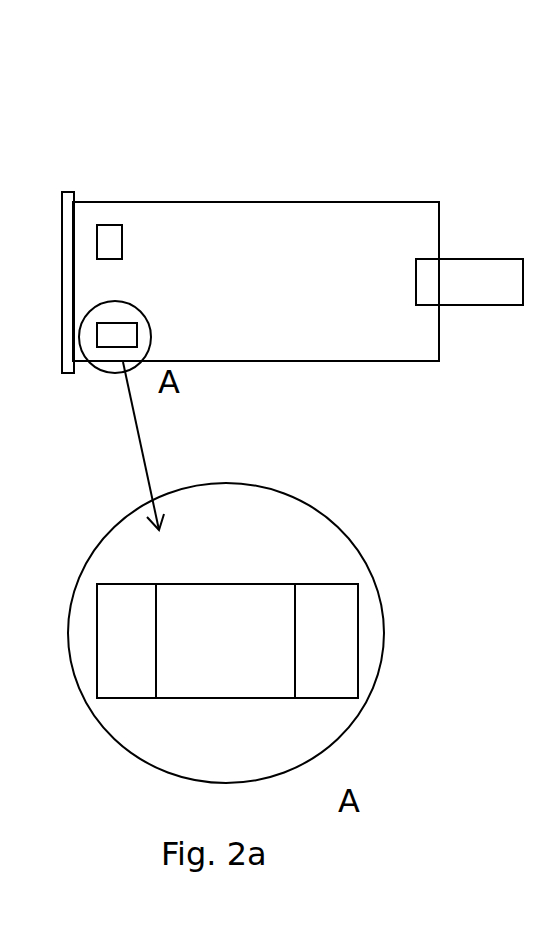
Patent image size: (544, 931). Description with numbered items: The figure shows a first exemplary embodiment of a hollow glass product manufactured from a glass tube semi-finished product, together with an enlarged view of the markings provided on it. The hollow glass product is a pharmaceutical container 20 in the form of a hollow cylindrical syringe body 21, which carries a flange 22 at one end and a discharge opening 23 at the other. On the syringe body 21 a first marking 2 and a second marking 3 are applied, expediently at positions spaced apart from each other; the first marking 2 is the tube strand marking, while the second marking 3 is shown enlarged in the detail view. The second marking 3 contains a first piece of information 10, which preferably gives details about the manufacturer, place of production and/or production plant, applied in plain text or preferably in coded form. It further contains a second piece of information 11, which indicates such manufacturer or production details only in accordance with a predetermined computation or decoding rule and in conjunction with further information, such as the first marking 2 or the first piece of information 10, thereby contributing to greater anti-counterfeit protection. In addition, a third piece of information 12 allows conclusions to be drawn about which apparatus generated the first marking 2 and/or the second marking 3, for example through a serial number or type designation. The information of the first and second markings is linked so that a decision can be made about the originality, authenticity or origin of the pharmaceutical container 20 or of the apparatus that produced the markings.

The pharmaceutical container 20 is at (157, 110).
The syringe body 21 is at (262, 202).
The flange 22 is at (61, 200).
The discharge opening 23 is at (498, 282).
The first marking 2 is at (112, 236).
The second marking 3 is at (122, 339).
The first piece of information 10 is at (125, 680).
The second piece of information 11 is at (232, 680).
The third piece of information 12 is at (322, 680).